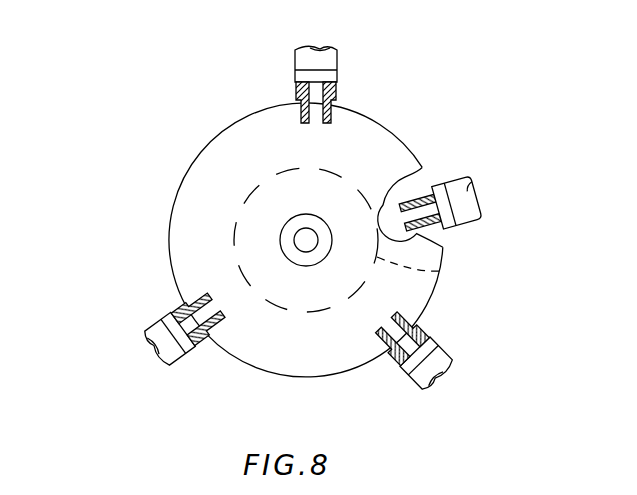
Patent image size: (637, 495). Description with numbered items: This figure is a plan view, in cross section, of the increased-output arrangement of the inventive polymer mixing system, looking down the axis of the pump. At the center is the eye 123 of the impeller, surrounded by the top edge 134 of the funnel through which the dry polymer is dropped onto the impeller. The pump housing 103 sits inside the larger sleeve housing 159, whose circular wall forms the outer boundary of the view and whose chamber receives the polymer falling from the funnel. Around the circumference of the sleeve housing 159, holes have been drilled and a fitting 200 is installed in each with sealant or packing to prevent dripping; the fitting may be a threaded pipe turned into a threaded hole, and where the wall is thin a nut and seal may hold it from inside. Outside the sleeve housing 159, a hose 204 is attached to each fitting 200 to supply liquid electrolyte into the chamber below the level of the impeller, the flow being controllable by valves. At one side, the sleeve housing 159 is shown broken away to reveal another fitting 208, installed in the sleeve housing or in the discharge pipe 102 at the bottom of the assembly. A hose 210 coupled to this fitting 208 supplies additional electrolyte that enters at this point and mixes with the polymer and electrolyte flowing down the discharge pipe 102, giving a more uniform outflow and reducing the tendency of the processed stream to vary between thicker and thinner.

The sleeve housing 159 is at (397, 131).
The top edge of funnel 134 is at (289, 221).
The eye of impeller 123 is at (294, 240).
The discharge pipe 102 is at (410, 192).
The pump housing 103 is at (440, 271).
The hose 210 is at (463, 178).
The fitting 208 is at (445, 231).
The hose 204 is at (338, 52).
The fitting 200 is at (337, 88).